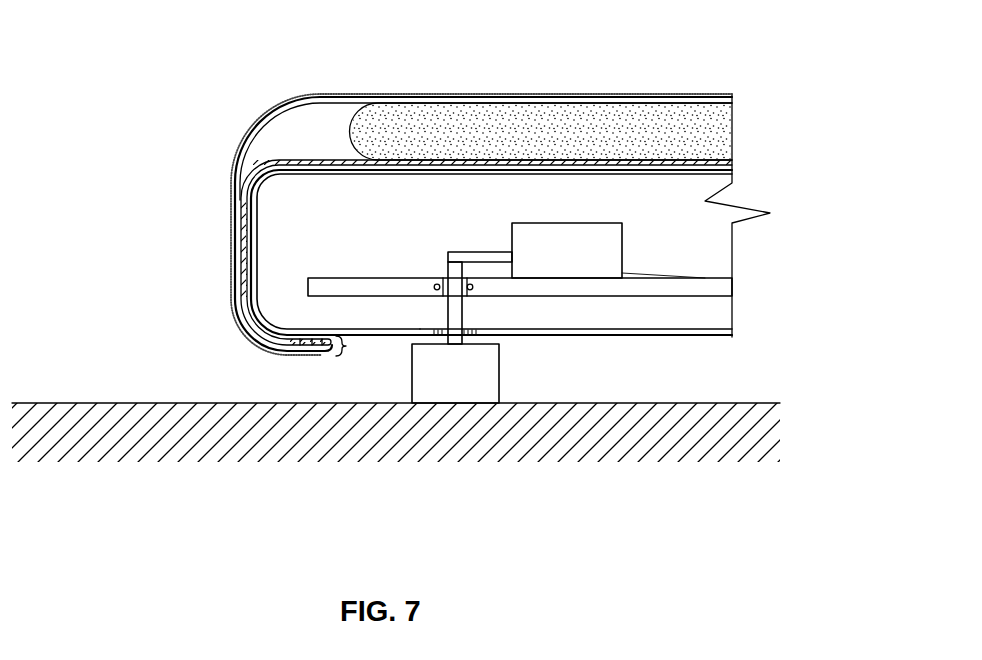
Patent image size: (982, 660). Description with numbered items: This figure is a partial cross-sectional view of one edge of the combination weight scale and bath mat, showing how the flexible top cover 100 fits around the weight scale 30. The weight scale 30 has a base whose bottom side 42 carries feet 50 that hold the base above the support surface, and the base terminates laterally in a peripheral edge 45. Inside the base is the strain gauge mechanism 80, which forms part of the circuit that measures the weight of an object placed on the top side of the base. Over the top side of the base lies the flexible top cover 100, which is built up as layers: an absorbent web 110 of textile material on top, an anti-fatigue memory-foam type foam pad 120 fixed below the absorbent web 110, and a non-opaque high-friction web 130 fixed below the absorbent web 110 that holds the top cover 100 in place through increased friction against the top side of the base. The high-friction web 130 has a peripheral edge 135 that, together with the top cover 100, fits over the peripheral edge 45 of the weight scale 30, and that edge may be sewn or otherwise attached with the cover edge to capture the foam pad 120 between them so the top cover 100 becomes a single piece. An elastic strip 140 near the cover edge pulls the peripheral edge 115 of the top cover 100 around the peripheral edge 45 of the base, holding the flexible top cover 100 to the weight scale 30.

The weight scale 30 is at (561, 197).
The bottom side 42 is at (704, 338).
The peripheral edge 45 is at (257, 256).
The feet 50 is at (500, 394).
The strain gauge mechanism 80 is at (623, 223).
The flexible top cover 100 is at (360, 351).
The absorbent web 110 is at (541, 103).
The peripheral edge of the top cover 115 is at (317, 343).
The foam pad 120 is at (421, 124).
The high-friction web 130 is at (247, 222).
The peripheral edge of the high-friction web 135 is at (327, 344).
The elastic strip 140 is at (307, 343).